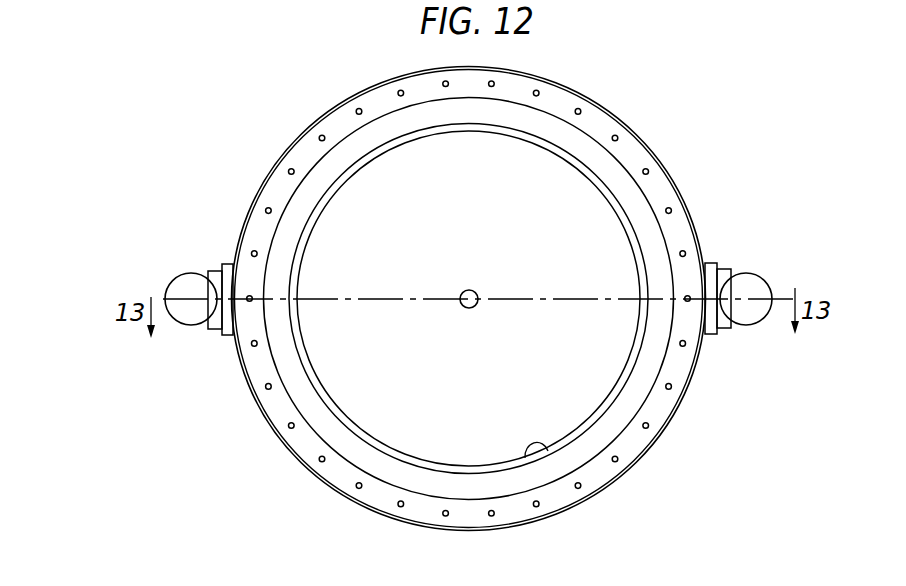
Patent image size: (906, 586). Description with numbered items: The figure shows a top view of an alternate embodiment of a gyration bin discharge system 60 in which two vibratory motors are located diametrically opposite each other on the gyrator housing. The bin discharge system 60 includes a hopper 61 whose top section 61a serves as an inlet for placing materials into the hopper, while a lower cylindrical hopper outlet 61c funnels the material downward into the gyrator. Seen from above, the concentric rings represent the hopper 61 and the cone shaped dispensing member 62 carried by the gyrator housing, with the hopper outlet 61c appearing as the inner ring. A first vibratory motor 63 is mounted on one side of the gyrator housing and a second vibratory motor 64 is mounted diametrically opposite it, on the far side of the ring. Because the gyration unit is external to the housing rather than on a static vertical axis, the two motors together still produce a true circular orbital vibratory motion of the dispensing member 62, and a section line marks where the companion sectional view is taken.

The bin discharge system 60 is at (660, 128).
The hopper 61 is at (685, 218).
The top section 61a is at (645, 362).
The hopper outlet 61c is at (543, 446).
The dispensing member 62 is at (565, 372).
The first vibratory motor 63 is at (186, 283).
The second vibratory motor 64 is at (748, 277).